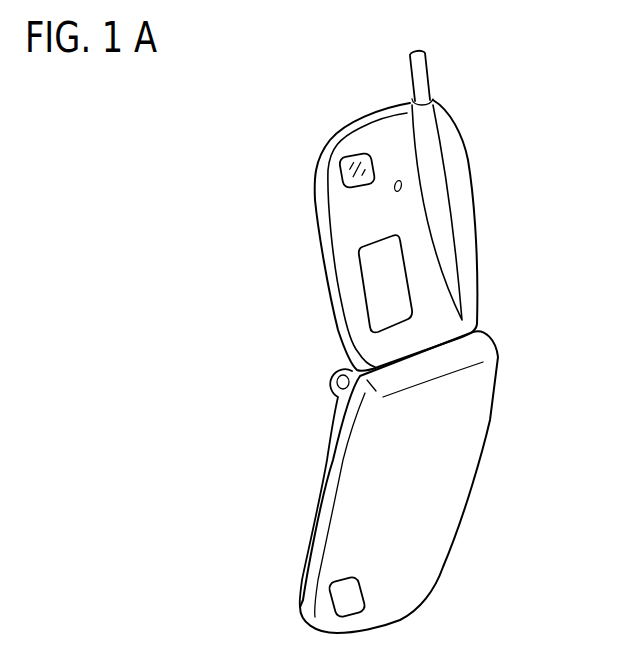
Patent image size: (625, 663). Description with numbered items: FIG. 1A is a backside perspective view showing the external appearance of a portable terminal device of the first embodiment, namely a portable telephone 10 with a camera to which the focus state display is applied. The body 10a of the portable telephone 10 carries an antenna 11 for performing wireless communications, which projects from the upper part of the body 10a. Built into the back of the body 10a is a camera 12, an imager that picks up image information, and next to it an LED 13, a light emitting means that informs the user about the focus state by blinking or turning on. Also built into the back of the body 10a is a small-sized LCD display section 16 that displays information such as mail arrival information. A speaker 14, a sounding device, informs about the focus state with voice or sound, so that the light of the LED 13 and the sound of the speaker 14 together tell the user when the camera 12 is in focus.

The portable telephone with a camera 10 is at (265, 117).
The body 10a is at (458, 469).
The antenna 11 is at (427, 73).
The camera 12 is at (343, 169).
The LED 13 is at (395, 190).
The speaker 14 is at (343, 600).
The small-sized LCD display section 16 is at (380, 283).